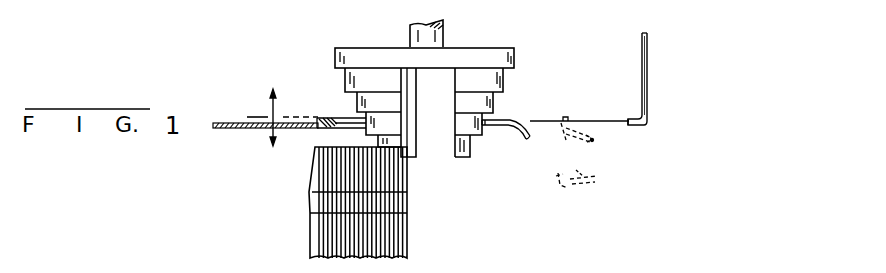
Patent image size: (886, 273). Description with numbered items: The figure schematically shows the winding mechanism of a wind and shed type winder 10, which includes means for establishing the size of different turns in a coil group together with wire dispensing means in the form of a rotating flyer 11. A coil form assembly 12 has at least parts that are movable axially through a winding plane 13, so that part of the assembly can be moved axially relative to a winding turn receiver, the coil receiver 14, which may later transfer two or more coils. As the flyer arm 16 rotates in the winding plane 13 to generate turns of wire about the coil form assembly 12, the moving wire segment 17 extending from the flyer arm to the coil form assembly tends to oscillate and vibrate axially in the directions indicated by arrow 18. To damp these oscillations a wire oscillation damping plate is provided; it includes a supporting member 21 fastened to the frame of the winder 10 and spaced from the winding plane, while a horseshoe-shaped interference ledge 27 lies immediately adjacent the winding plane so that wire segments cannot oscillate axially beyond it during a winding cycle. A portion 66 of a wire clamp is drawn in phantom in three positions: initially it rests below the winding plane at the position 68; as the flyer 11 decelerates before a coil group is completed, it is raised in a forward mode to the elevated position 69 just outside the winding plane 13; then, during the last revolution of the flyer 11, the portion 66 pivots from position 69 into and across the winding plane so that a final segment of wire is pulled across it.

The wind and shed type winder 10 is at (535, 104).
The rotating flyer 11 is at (647, 57).
The coil form assembly 12 is at (330, 70).
The winding plane 13 is at (256, 116).
The coil receiver 14 is at (402, 205).
The flyer arm 16 is at (630, 126).
The moving wire segment 17 is at (613, 120).
The arrow 18 is at (270, 117).
The supporting member 21 is at (234, 129).
The interference ledge 27 is at (341, 118).
The portion of a wire clamp 66 is at (572, 188).
The position 68 is at (580, 172).
The elevated position 69 is at (560, 143).